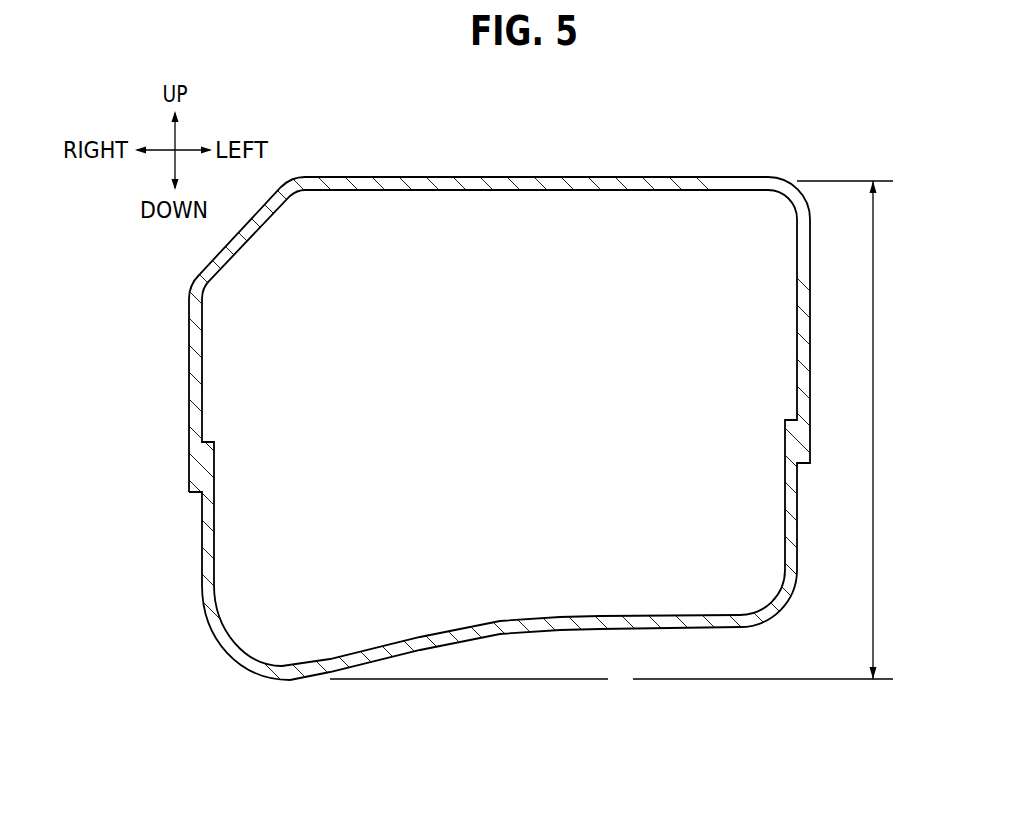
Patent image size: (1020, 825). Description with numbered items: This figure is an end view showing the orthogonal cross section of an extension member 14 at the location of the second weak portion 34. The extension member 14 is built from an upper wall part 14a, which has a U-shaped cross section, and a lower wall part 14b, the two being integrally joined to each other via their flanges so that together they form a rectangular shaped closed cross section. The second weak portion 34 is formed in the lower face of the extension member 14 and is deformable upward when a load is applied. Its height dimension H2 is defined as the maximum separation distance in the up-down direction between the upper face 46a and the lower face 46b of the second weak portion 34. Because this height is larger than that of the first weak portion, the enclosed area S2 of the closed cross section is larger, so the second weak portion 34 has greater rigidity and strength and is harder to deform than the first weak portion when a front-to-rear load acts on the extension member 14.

The extension member 14 is at (510, 409).
The upper wall part 14a is at (380, 177).
The lower wall part 14b is at (318, 678).
The upper face 46a is at (549, 177).
The lower face 46b is at (280, 678).
The second weak portion 34 is at (618, 652).
The area of the closed cross section of the second weak portion S2 is at (540, 425).
The height dimension H2 is at (873, 430).